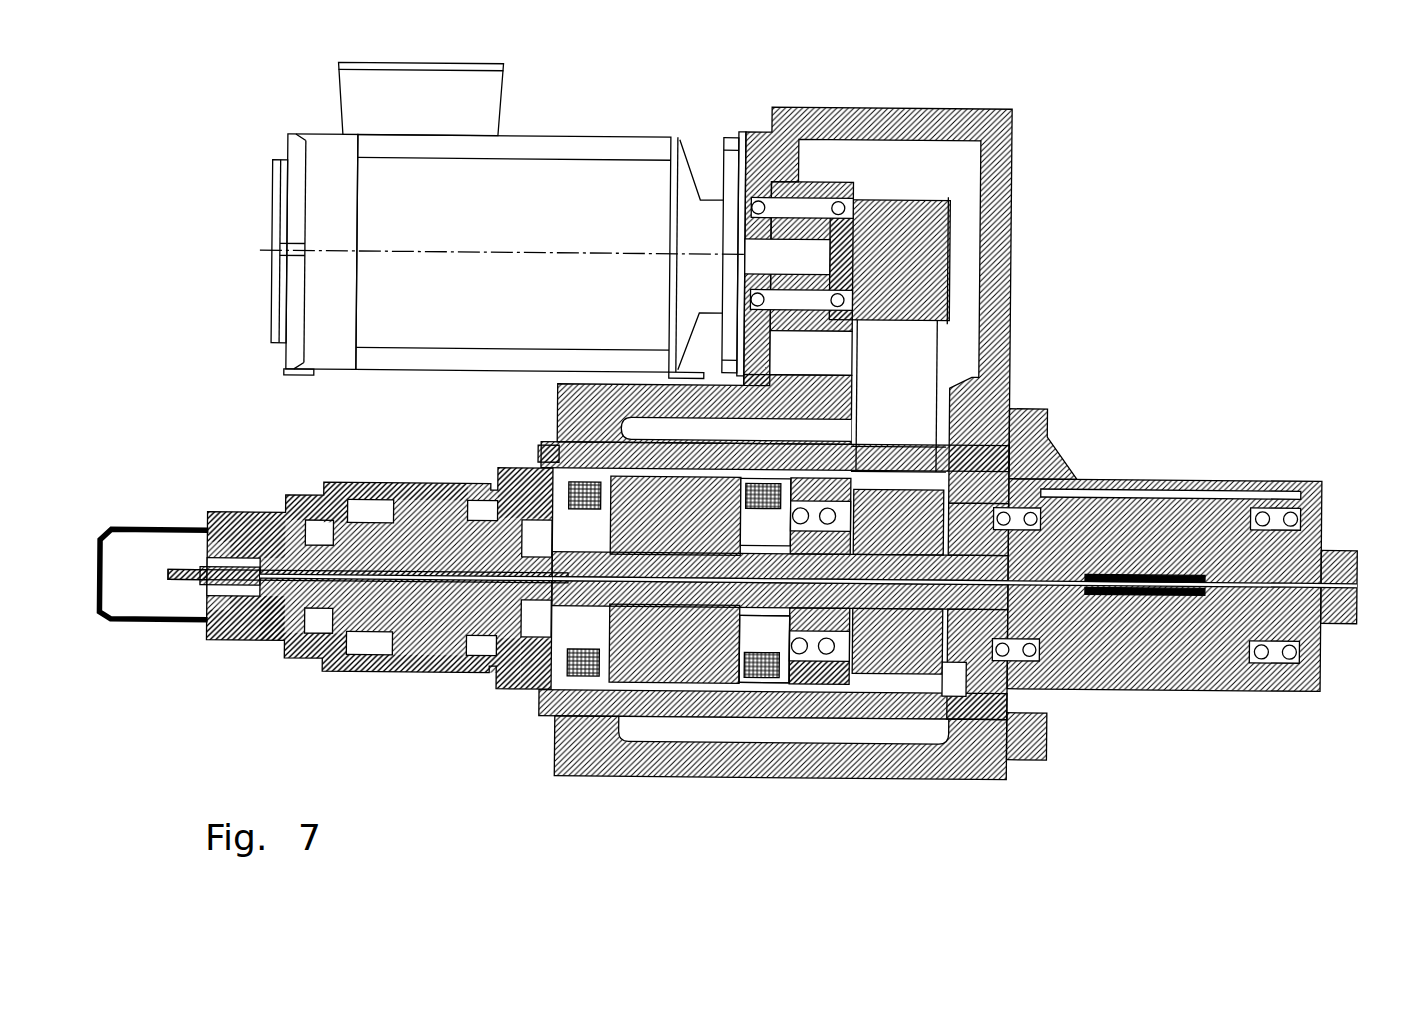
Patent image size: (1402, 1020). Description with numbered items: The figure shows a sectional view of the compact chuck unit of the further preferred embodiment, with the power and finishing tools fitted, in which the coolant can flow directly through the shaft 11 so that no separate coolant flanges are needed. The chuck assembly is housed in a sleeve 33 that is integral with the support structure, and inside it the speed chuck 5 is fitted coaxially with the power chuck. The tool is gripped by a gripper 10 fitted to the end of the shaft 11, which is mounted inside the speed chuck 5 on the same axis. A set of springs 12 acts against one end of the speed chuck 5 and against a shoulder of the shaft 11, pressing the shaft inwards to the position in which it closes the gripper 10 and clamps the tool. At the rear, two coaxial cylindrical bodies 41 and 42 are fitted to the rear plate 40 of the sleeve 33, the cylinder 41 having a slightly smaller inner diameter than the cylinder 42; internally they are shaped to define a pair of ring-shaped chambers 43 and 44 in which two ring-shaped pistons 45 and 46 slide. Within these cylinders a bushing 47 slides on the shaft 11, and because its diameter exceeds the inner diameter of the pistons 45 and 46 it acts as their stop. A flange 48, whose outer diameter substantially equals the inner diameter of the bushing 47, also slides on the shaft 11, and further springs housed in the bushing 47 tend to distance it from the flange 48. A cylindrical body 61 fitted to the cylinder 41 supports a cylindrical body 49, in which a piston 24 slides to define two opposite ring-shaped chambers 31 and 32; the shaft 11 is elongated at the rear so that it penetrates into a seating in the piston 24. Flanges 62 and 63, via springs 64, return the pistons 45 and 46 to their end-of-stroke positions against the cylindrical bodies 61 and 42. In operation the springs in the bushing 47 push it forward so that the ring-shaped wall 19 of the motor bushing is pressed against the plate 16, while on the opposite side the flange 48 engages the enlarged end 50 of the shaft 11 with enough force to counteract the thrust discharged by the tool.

The speed chuck 5 is at (930, 620).
The gripper 10 is at (1317, 633).
The shaft 11 is at (1040, 522).
The set of springs 12 is at (1145, 650).
The plate 16 is at (787, 640).
The ring-shaped wall 19 is at (768, 617).
The piston 24 is at (207, 520).
The ring-shaped chamber 31 is at (275, 642).
The ring-shaped chamber 32 is at (228, 640).
The sleeve 33 is at (797, 462).
The rear plate 40 is at (537, 447).
The cylindrical body 41 is at (400, 487).
The cylindrical body 42 is at (500, 493).
The ring-shaped chamber 43 is at (345, 662).
The ring-shaped chamber 44 is at (500, 655).
The ring-shaped piston 45 is at (345, 500).
The ring-shaped piston 46 is at (457, 490).
The bushing 47 is at (477, 650).
The flange 48 is at (375, 650).
The cylindrical body 49 is at (267, 512).
The enlarged end of shaft 50 is at (308, 645).
The cylindrical body 61 is at (320, 497).
The flange 62 is at (400, 658).
The flange 63 is at (462, 662).
The springs 64 is at (432, 656).